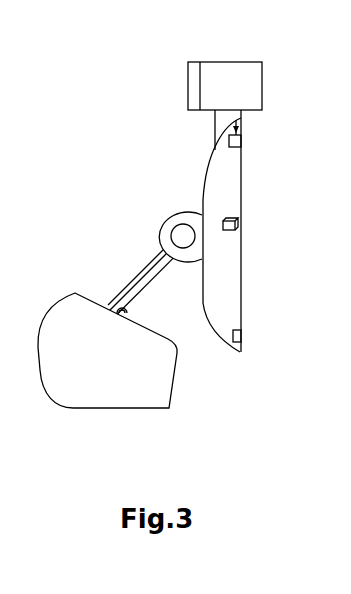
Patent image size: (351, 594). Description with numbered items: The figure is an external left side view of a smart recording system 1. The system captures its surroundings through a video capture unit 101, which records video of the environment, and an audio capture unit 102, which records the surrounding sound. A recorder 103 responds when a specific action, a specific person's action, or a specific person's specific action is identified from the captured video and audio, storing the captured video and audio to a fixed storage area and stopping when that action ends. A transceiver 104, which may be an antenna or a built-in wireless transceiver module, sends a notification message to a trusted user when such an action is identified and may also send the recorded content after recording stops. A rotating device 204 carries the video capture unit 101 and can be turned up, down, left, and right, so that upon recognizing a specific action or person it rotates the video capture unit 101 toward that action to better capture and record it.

The smart recording system 1 is at (190, 171).
The video capture unit 101 is at (240, 62).
The audio capture unit 102 is at (232, 347).
The recorder 103 is at (241, 224).
The transceiver 104 is at (243, 118).
The rotating device 204 is at (146, 268).